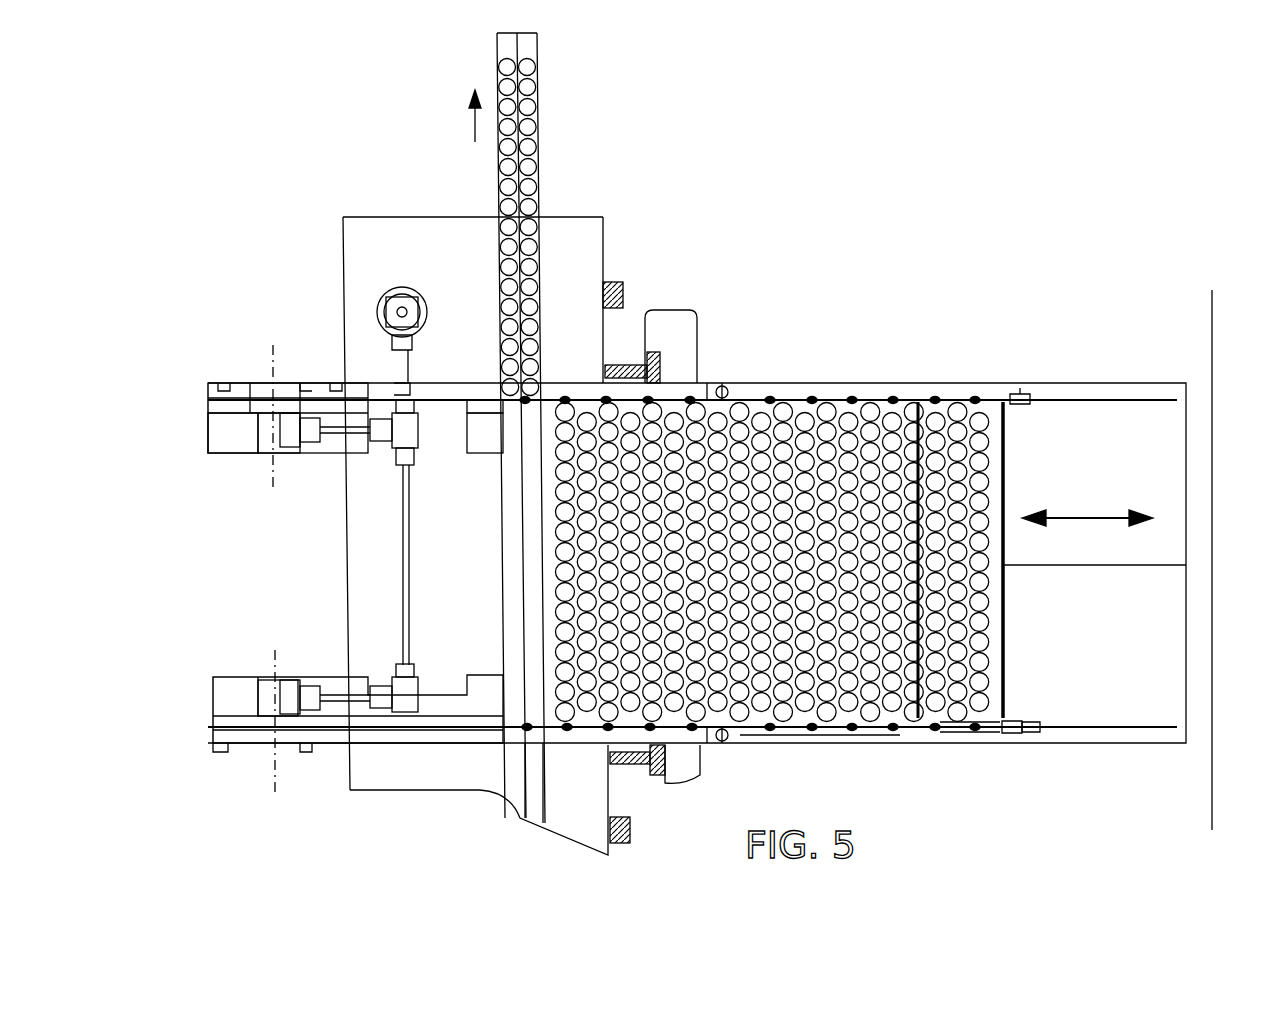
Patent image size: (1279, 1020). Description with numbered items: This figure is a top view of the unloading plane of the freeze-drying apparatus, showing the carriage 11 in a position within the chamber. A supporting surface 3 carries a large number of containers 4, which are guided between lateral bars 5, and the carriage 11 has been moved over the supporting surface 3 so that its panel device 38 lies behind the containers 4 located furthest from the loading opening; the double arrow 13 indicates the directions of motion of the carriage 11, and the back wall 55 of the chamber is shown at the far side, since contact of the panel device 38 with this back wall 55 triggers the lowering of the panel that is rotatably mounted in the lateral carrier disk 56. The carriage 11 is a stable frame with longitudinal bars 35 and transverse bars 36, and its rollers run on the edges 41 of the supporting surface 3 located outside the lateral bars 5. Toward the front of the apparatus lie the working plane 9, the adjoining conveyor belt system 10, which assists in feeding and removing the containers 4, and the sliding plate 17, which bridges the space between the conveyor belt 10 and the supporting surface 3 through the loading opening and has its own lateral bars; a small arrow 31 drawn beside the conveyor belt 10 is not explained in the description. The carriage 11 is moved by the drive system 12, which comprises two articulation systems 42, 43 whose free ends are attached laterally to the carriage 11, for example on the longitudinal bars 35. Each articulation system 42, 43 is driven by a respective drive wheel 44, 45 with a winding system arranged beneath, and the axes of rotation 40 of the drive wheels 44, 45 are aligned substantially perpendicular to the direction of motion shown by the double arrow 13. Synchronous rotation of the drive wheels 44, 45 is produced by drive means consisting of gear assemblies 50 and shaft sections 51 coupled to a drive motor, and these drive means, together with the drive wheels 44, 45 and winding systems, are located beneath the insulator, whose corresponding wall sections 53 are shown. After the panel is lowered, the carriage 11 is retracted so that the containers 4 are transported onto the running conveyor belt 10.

The supporting surfaces 3 is at (1163, 444).
The container 4 is at (533, 163).
The lateral bars 5 is at (1097, 404).
The working plane 9 is at (358, 560).
The conveyor belt system 10 is at (537, 210).
The carriage 11 is at (1004, 458).
The drive system 12 is at (223, 670).
The double arrow 13 is at (1082, 520).
The sliding plate 17 is at (650, 737).
The direction arrow 31 is at (470, 122).
The longitudinal bars 35 is at (955, 728).
The transverse bars 36 is at (1003, 656).
The panel device 38 is at (1030, 742).
The axes of rotation 40 is at (273, 360).
The edges 41 is at (840, 740).
The articulation system 42 is at (577, 398).
The articulation system 43 is at (555, 730).
The drive wheel 44 is at (257, 407).
The drive wheel 45 is at (258, 745).
The gear assemblies 50 is at (390, 442).
The shaft sections 51 is at (407, 370).
The wall sections 53 is at (237, 457).
The back wall 55 is at (1214, 660).
The carrier disk 56 is at (413, 293).